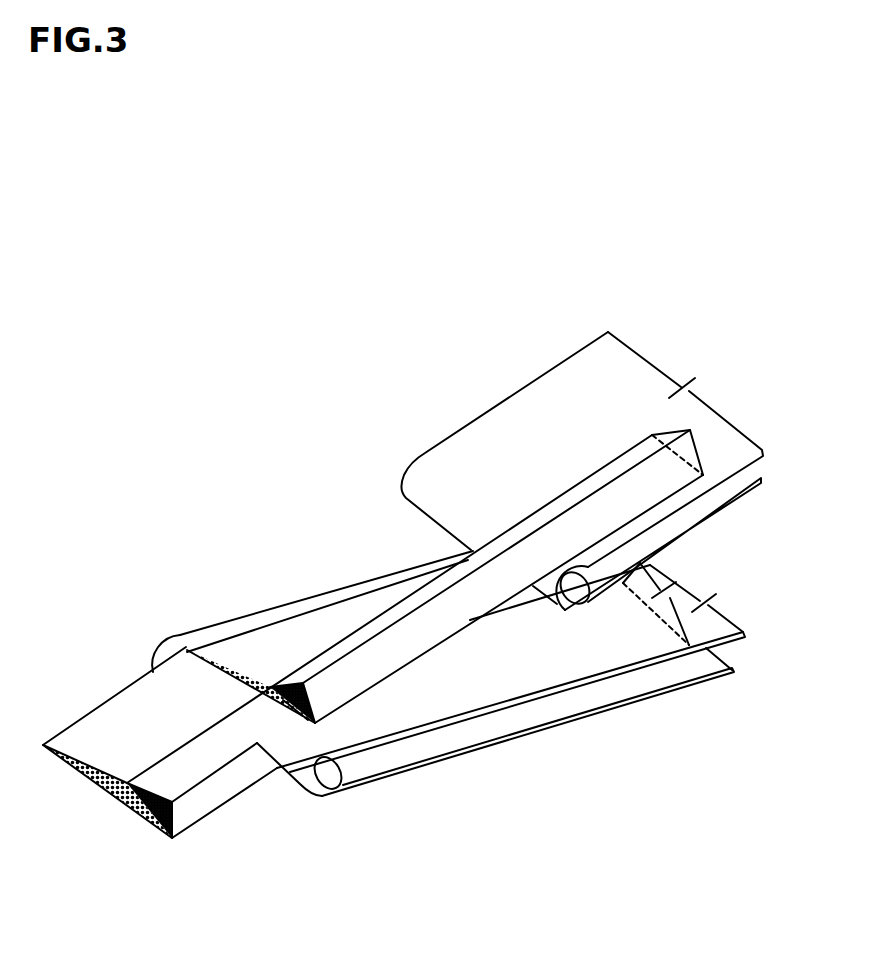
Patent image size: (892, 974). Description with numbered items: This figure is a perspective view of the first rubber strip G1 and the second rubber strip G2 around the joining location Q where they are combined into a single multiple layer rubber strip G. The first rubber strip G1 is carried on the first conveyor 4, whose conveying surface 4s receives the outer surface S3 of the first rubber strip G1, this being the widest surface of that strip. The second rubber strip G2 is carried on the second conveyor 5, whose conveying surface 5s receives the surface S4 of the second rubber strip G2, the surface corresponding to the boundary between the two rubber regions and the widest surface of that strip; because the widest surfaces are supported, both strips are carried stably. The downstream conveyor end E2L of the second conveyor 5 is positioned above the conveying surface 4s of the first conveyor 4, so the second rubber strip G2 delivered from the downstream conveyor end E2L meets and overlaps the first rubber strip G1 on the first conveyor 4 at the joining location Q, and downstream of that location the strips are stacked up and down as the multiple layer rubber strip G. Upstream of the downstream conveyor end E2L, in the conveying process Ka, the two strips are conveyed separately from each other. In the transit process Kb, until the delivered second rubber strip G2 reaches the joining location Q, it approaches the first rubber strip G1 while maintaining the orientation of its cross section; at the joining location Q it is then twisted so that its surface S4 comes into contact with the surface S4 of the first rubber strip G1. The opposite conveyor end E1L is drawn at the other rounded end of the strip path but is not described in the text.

The multiple layer rubber strip G is at (211, 838).
The first rubber strip G1 is at (466, 700).
The second rubber strip G2 is at (405, 668).
The joining location Q is at (258, 655).
The outer surface S3 is at (656, 610).
The facing surface S4 is at (688, 466).
The conveying process Ka is at (535, 453).
The transit process Kb is at (291, 590).
The first rounded end E1L is at (156, 620).
The downstream conveyor end E2L is at (396, 465).
The first conveyor 4 is at (501, 702).
The conveying surface 4s is at (512, 690).
The second conveyor 5 is at (582, 453).
The conveying surface 5s is at (582, 453).